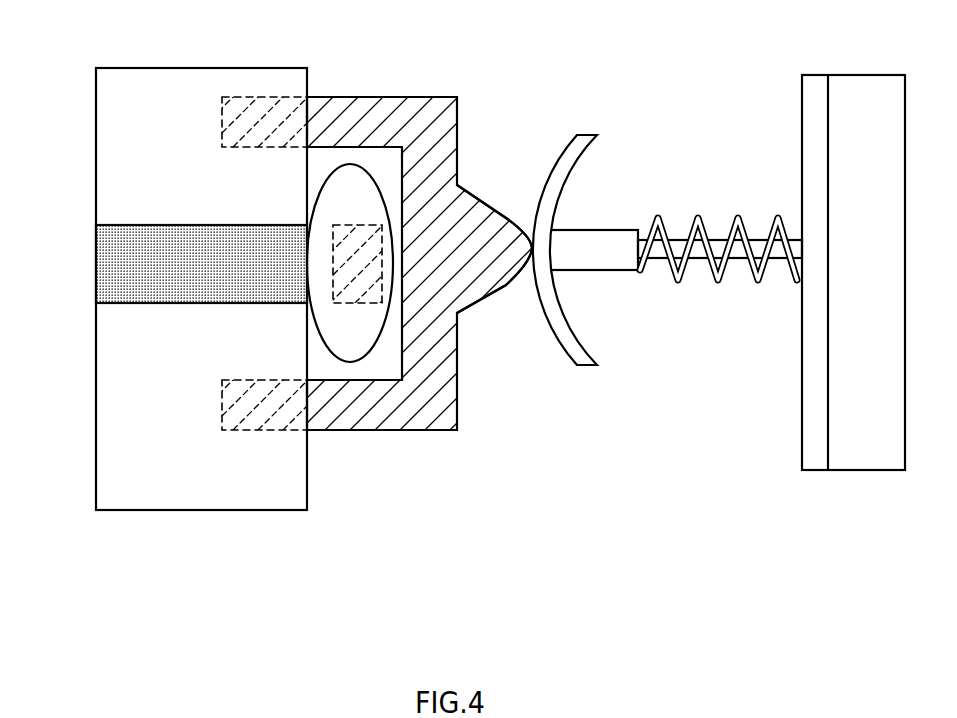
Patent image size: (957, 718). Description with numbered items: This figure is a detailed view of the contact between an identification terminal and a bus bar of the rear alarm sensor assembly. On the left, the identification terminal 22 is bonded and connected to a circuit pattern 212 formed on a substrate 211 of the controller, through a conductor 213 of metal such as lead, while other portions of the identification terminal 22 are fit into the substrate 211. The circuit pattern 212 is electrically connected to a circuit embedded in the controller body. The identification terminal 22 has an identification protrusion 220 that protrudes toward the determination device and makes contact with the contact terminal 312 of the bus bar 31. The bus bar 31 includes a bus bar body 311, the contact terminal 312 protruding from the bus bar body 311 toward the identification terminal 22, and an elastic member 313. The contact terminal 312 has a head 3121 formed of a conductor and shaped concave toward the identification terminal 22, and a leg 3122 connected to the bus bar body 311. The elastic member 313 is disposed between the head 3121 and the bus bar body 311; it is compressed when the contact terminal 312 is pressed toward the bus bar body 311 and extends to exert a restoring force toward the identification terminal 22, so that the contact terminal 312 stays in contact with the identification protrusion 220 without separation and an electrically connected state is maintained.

The substrate 211 is at (107, 462).
The circuit pattern 212 is at (105, 258).
The conductor 213 is at (348, 177).
The identification terminal 22 is at (374, 450).
The identification protrusion 220 is at (482, 213).
The bus bar 31 is at (788, 478).
The bus bar body 311 is at (855, 87).
The contact terminal 312 is at (727, 325).
The head 3121 is at (590, 353).
The leg 3122 is at (700, 252).
The elastic member 313 is at (700, 222).